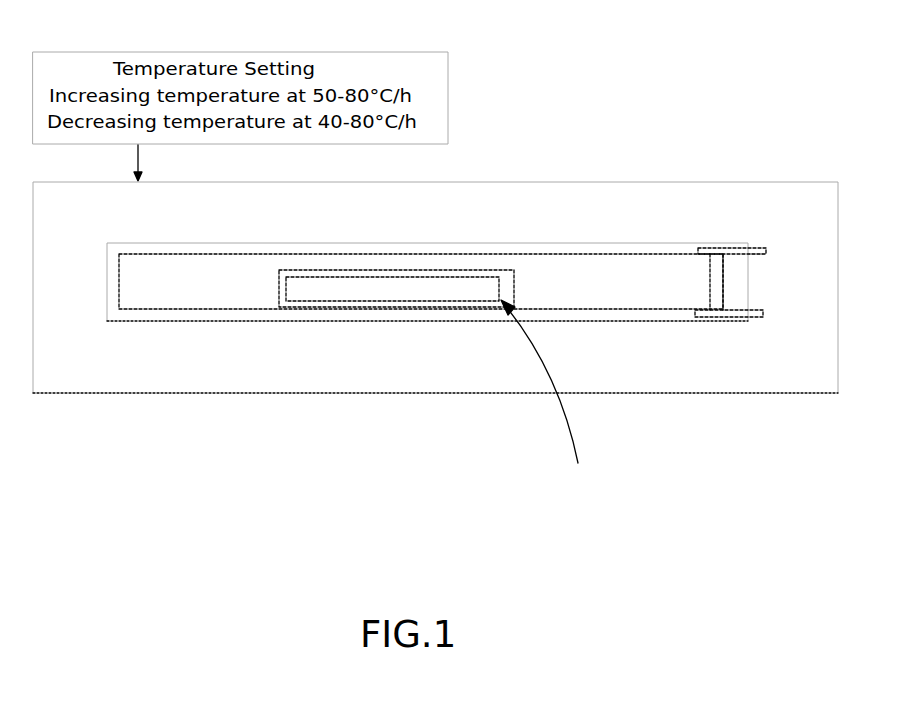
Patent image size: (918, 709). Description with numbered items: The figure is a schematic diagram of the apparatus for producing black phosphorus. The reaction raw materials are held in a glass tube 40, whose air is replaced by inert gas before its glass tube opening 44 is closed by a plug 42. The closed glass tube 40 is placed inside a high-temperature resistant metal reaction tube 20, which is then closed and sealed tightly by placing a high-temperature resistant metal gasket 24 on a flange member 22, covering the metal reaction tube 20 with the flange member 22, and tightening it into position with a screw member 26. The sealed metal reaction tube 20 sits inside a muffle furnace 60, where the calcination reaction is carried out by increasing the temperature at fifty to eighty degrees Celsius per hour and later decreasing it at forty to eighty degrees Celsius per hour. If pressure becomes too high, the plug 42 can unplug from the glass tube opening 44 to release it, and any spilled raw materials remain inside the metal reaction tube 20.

The high-temperature resistant metal reaction tube 20 is at (146, 318).
The flange member 22 is at (735, 262).
The high-temperature resistant metal gasket 24 is at (717, 286).
The screw member 26 is at (760, 250).
The glass tube 40 is at (310, 302).
The plug 42 is at (503, 285).
The glass tube opening 44 is at (548, 394).
The muffle furnace 60 is at (48, 393).